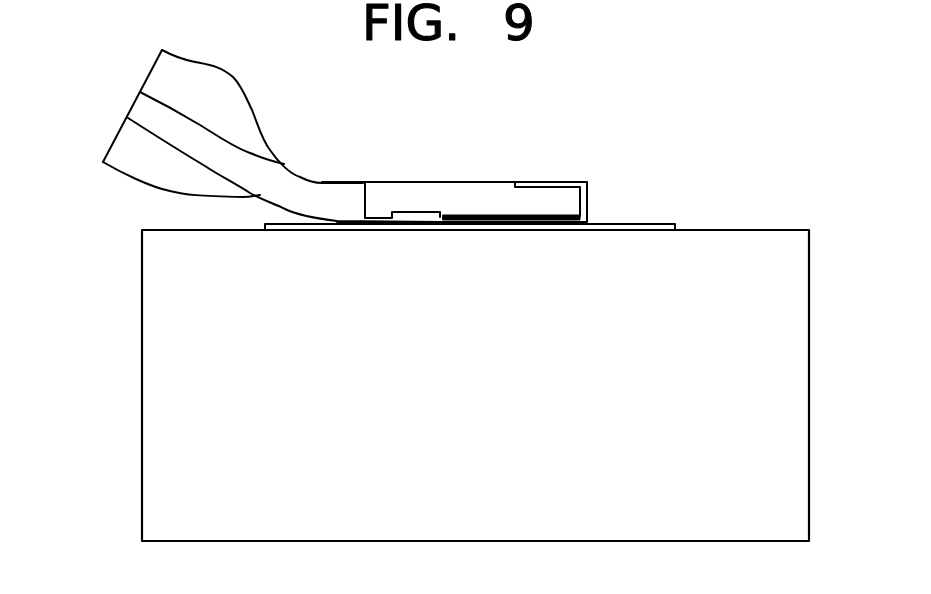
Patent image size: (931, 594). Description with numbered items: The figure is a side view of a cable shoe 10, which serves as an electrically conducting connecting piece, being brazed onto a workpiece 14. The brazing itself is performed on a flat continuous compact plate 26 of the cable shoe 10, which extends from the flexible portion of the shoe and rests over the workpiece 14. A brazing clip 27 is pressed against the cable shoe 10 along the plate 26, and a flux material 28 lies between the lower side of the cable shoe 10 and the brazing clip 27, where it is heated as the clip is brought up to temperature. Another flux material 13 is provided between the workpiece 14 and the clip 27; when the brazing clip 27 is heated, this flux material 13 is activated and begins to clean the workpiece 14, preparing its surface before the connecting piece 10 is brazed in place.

The cable shoe 10 is at (152, 170).
The flux material 13 is at (628, 228).
The workpiece 14 is at (207, 348).
The flat continuous compact plate 26 is at (478, 193).
The brazing clip 27 is at (558, 183).
The flux material 28 is at (513, 223).